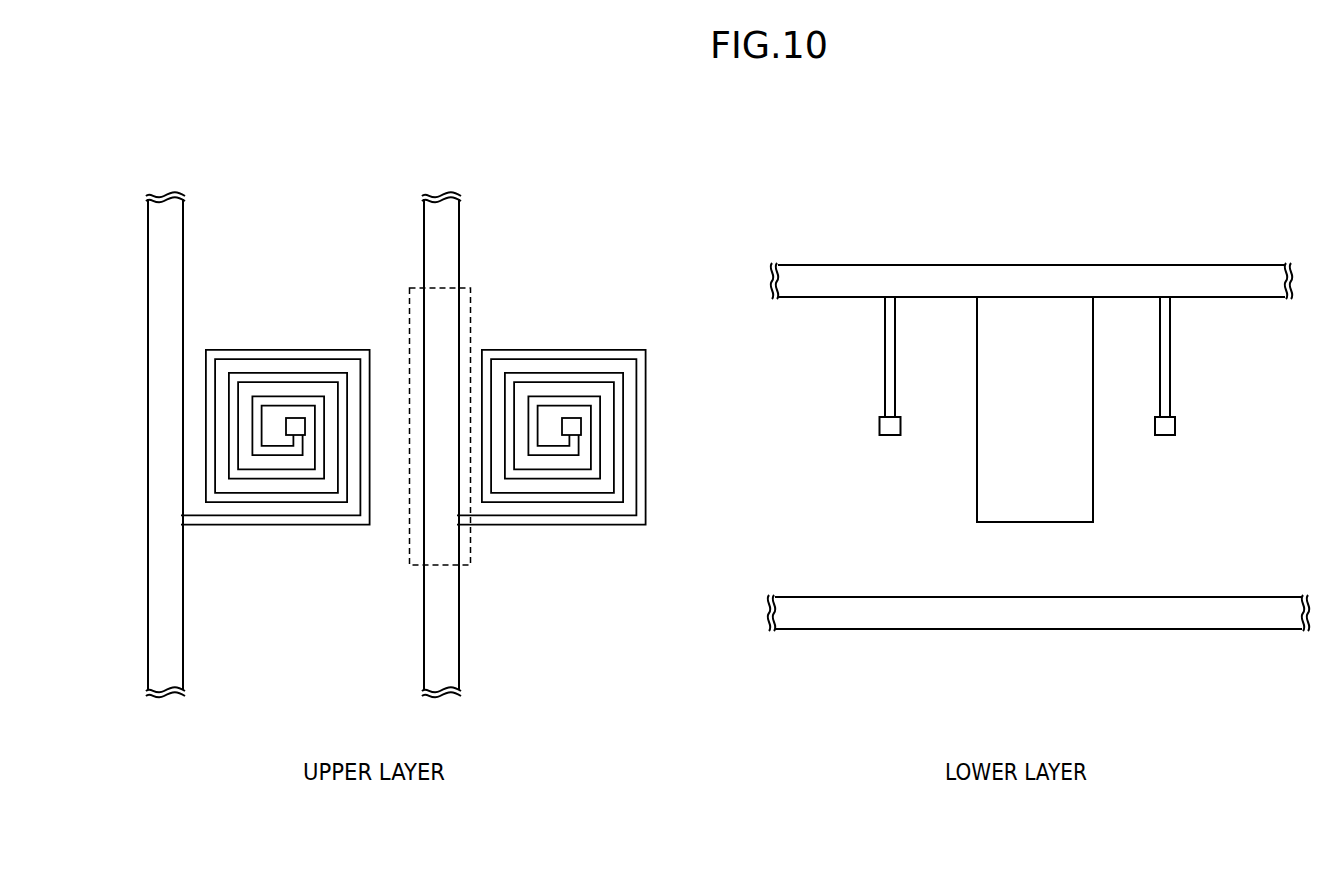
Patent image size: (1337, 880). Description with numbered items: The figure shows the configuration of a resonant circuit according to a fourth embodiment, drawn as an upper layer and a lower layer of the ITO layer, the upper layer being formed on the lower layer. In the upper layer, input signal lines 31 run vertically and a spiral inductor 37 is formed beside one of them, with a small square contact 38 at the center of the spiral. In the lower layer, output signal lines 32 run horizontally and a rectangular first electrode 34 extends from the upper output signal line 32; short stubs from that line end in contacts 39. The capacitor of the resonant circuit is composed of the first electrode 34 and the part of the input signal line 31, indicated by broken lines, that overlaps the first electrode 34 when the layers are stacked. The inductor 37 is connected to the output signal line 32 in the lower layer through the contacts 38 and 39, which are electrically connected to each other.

The input signal line 31 is at (184, 240).
The output signal line 32 is at (988, 265).
The first electrode 34 is at (1083, 524).
The inductor 37 is at (568, 527).
The contact 38 is at (564, 417).
The contact 39 is at (1166, 437).